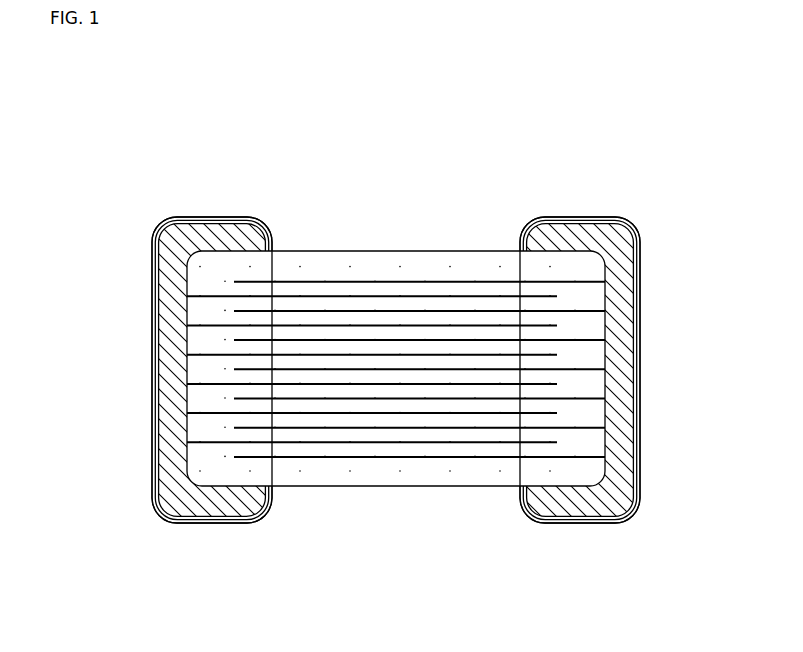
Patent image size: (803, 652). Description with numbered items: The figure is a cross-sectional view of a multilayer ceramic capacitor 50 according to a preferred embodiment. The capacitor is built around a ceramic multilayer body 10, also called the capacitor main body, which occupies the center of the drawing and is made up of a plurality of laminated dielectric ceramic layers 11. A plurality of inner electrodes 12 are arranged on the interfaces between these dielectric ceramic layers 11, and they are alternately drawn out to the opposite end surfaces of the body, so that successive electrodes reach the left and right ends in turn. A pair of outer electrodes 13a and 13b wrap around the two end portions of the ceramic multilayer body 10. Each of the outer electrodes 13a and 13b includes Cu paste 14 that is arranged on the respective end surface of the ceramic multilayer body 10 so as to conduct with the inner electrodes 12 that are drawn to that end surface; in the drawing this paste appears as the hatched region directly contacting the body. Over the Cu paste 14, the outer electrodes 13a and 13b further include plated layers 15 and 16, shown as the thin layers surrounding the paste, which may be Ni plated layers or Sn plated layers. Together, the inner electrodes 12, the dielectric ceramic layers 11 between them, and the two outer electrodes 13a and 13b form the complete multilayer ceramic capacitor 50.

The multilayer ceramic capacitor 50 is at (480, 192).
The ceramic multilayer body 10 is at (403, 252).
The dielectric ceramic layers 11 is at (320, 373).
The inner electrodes 12 is at (335, 323).
The outer electrode 13a is at (607, 216).
The outer electrode 13b is at (180, 217).
The Cu paste 14 is at (180, 319).
The plated layer 15 is at (188, 522).
The plated layer 16 is at (227, 522).